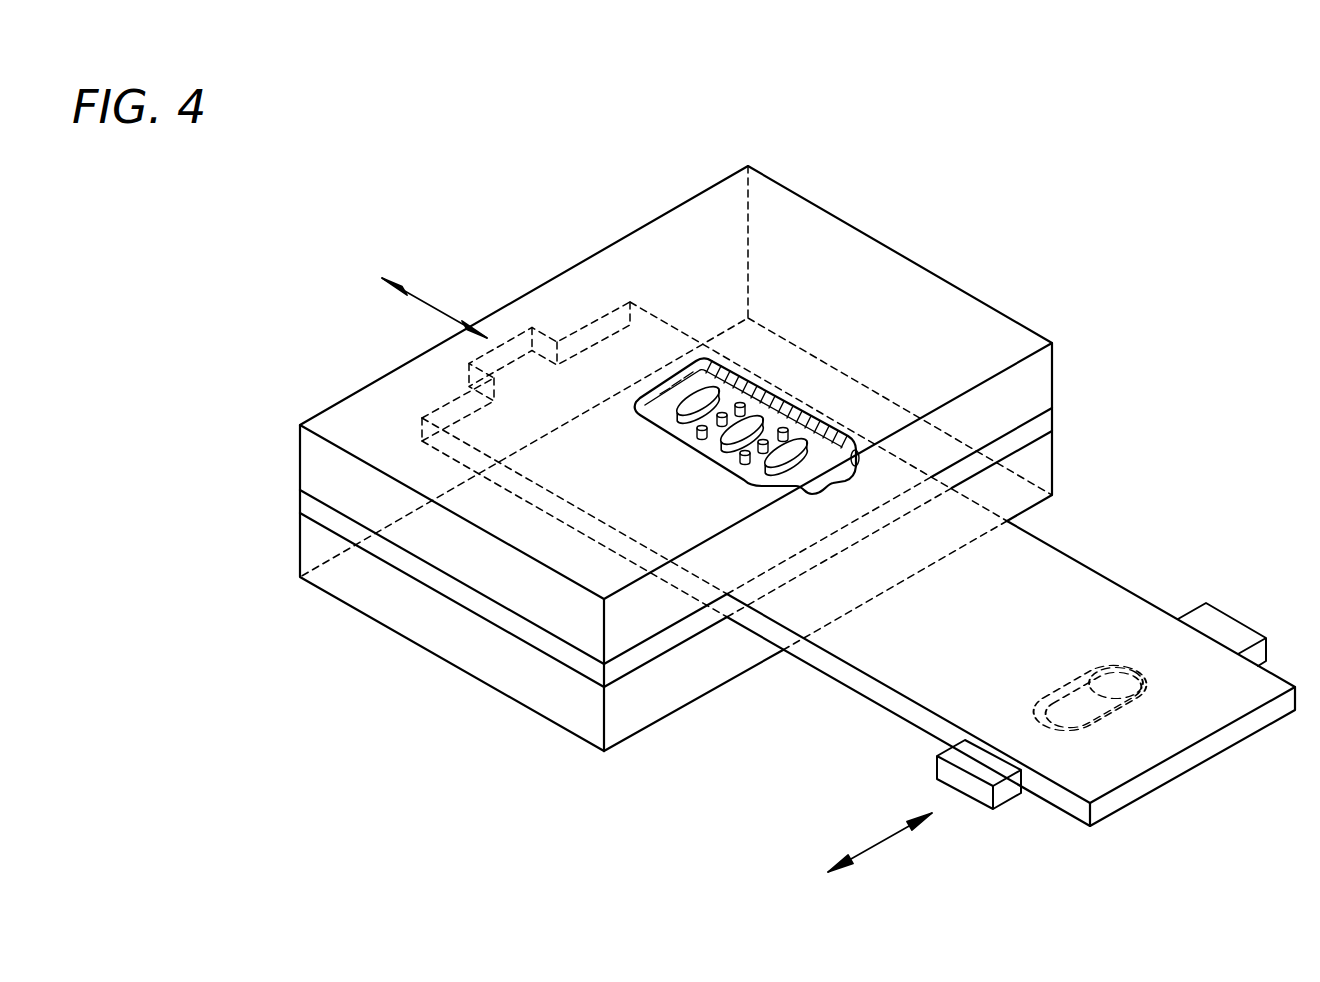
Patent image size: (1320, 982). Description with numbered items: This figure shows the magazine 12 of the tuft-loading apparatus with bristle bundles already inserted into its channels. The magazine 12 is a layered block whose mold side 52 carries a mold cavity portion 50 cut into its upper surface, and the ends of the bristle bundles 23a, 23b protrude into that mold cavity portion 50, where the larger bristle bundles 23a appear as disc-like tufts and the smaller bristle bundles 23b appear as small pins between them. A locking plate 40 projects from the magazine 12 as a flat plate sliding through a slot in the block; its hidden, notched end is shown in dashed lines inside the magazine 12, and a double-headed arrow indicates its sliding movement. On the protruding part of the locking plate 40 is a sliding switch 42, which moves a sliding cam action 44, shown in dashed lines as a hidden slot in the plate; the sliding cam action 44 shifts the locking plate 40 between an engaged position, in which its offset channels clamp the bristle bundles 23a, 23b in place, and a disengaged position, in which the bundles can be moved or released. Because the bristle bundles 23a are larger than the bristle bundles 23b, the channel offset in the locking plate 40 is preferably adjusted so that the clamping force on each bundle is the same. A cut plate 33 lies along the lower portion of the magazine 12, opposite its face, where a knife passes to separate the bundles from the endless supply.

The magazine 12 is at (306, 291).
The locking plate 40 is at (510, 343).
The mold side 52 is at (943, 279).
The cut plate 33 is at (407, 639).
The mold cavity portion 50 is at (833, 478).
The bristle bundles 23a is at (723, 364).
The bristle bundles 23b is at (745, 404).
The sliding switch 42 is at (1224, 610).
The sliding cam action 44 is at (1117, 704).